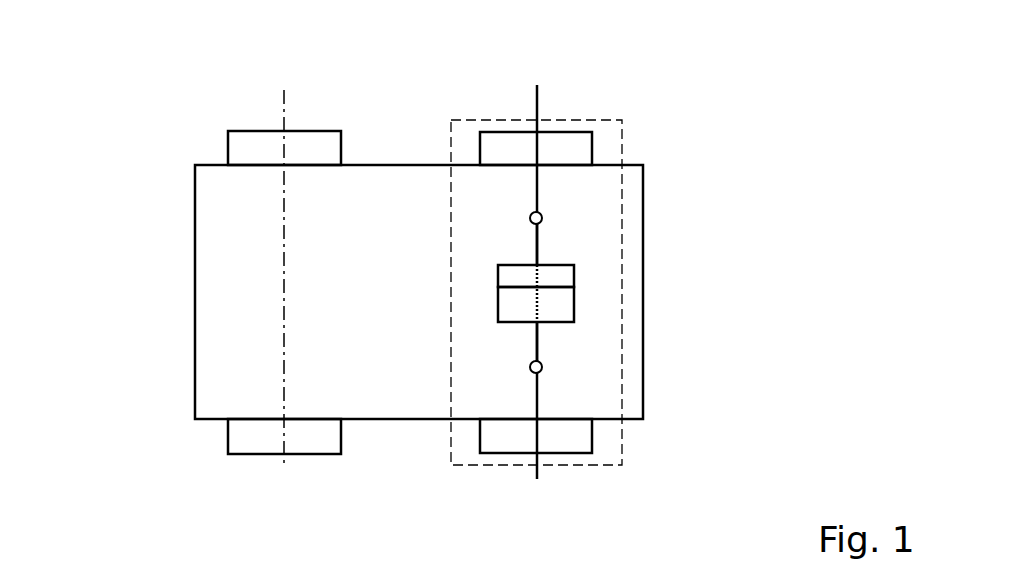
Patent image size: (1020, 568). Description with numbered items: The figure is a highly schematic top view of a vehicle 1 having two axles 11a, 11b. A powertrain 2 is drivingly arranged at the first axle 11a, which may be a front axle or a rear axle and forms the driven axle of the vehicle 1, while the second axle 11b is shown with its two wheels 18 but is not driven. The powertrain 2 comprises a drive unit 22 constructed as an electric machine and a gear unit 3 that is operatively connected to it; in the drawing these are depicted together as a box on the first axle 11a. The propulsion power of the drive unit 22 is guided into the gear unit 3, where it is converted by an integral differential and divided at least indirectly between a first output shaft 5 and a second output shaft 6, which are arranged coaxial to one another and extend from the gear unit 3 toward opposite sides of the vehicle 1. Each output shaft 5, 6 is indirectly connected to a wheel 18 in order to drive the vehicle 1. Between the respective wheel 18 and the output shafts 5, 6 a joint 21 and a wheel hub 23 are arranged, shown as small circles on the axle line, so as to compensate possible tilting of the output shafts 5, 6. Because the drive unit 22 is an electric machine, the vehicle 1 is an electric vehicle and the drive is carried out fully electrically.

The vehicle 1 is at (190, 131).
The powertrain 2 is at (510, 119).
The gear unit 3 is at (559, 275).
The first output shaft 5 is at (538, 341).
The second output shaft 6 is at (540, 240).
The first axle 11a is at (538, 105).
The second axle 11b is at (284, 106).
The wheel 18 is at (565, 145).
The joint 21 is at (531, 214).
The drive unit 22 is at (560, 303).
The wheel hub 23 is at (540, 196).